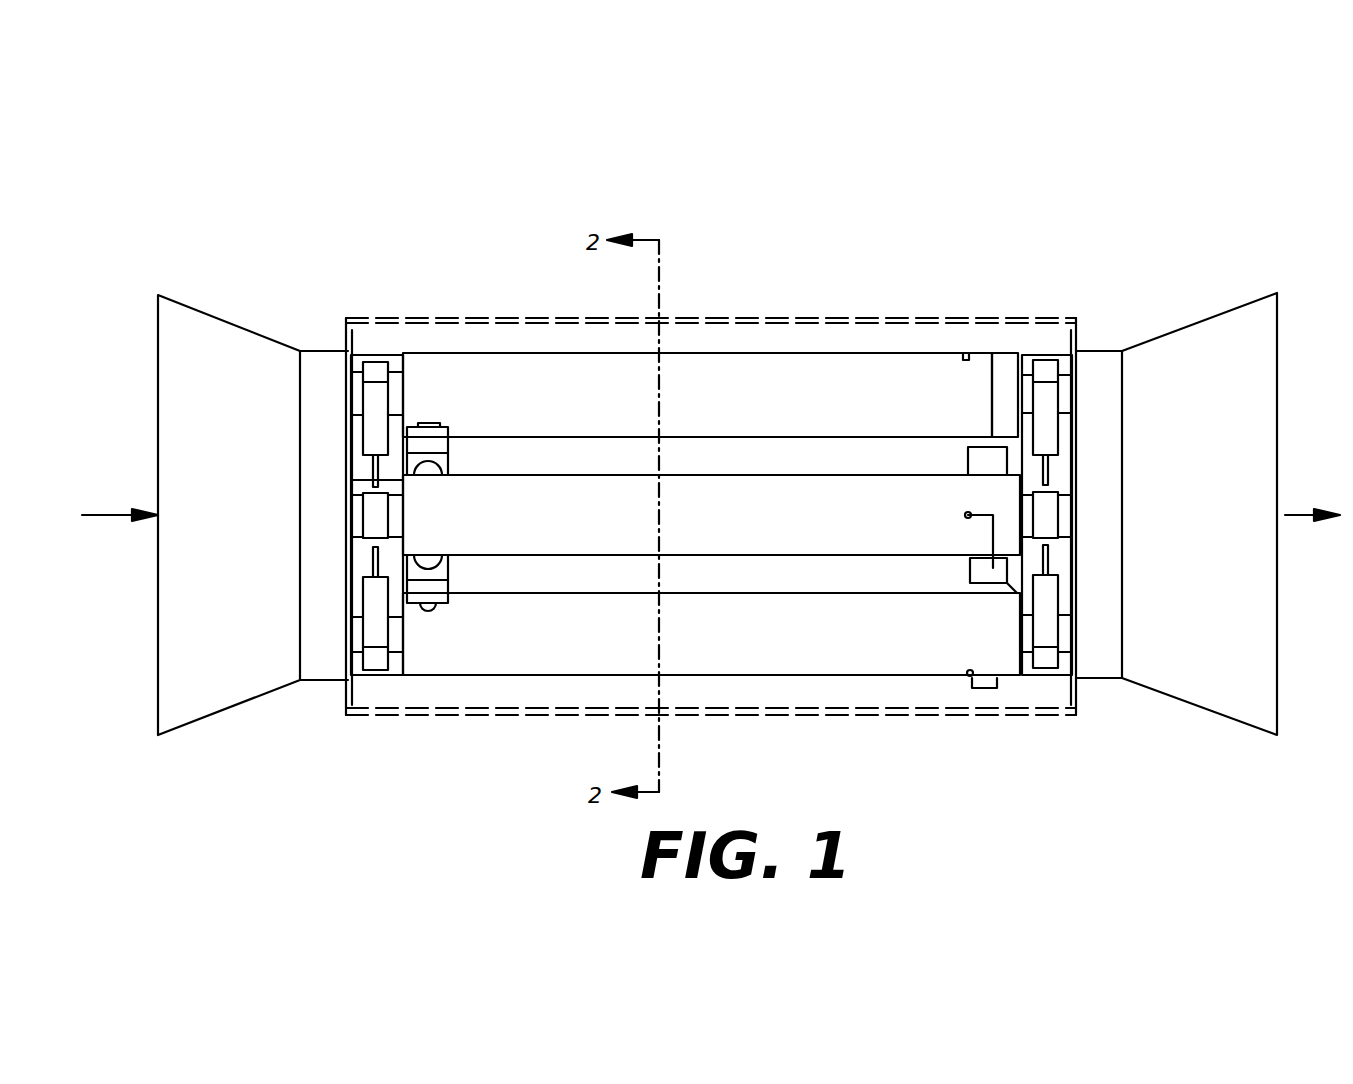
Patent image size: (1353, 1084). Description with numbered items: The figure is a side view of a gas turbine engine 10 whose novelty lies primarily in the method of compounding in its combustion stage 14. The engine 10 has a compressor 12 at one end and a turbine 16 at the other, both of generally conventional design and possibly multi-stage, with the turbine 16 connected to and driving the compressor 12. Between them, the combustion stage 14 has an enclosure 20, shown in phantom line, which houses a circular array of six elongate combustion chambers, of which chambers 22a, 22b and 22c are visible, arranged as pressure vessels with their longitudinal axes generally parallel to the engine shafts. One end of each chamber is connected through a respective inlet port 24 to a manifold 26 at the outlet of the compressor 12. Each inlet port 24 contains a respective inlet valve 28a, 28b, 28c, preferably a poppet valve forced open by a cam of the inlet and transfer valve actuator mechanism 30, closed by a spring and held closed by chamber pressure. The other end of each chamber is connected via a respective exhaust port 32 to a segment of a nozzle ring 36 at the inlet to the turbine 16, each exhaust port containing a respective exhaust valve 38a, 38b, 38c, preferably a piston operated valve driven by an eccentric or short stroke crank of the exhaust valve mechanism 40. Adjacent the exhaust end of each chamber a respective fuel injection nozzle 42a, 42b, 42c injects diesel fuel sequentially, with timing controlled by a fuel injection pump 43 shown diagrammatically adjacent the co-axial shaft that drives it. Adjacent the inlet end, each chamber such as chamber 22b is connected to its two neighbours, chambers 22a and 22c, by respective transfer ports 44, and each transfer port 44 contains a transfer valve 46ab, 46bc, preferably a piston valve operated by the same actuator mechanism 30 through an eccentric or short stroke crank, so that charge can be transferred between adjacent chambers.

The gas turbine engine 10 is at (505, 177).
The compressor 12 is at (253, 495).
The combustion stage 14 is at (711, 524).
The turbine 16 is at (1176, 496).
The enclosure 20 is at (711, 477).
The combustion chamber 22a is at (697, 357).
The combustion chamber 22b is at (711, 534).
The combustion chamber 22c is at (711, 681).
The inlet port 24 is at (422, 476).
The manifold 26 is at (253, 552).
The inlet valve 28a is at (346, 382).
The inlet valve 28b is at (257, 571).
The inlet valve 28c is at (330, 693).
The inlet and transfer valve actuator mechanism 30 is at (260, 431).
The exhaust port 32 is at (1059, 471).
The nozzle ring 36 is at (1176, 539).
The exhaust valve 38a is at (1100, 398).
The exhaust valve 38b is at (1169, 567).
The exhaust valve 38c is at (1090, 661).
The exhaust valve mechanism 40 is at (1027, 487).
The fuel injection nozzle 42a is at (965, 356).
The fuel injection nozzle 42b is at (966, 518).
The fuel injection nozzle 42c is at (936, 723).
The fuel injection pump 43 is at (950, 621).
The transfer port 44 is at (476, 461).
The transfer valve 46ab is at (504, 372).
The transfer valve 46bc is at (475, 672).